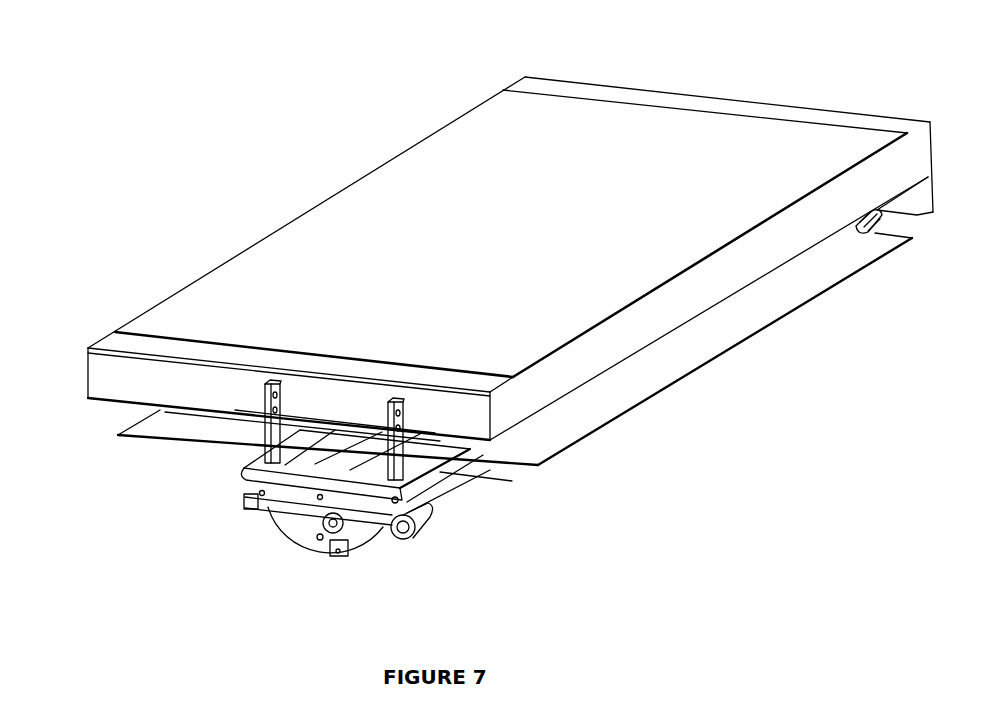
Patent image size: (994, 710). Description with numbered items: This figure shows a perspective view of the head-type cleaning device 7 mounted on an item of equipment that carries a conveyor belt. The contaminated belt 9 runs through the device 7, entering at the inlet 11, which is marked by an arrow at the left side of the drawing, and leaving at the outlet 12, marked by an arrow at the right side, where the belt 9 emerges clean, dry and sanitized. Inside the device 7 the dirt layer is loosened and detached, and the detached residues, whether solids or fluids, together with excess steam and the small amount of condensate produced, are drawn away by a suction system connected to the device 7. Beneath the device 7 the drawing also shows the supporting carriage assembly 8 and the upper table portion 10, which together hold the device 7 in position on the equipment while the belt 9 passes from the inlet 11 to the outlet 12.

The device 7 is at (382, 532).
The carriage plate 8 is at (323, 457).
The contaminated belt 9 is at (263, 303).
The upper table top 10 is at (467, 412).
The inlet 11 is at (118, 428).
The outlet 12 is at (540, 470).